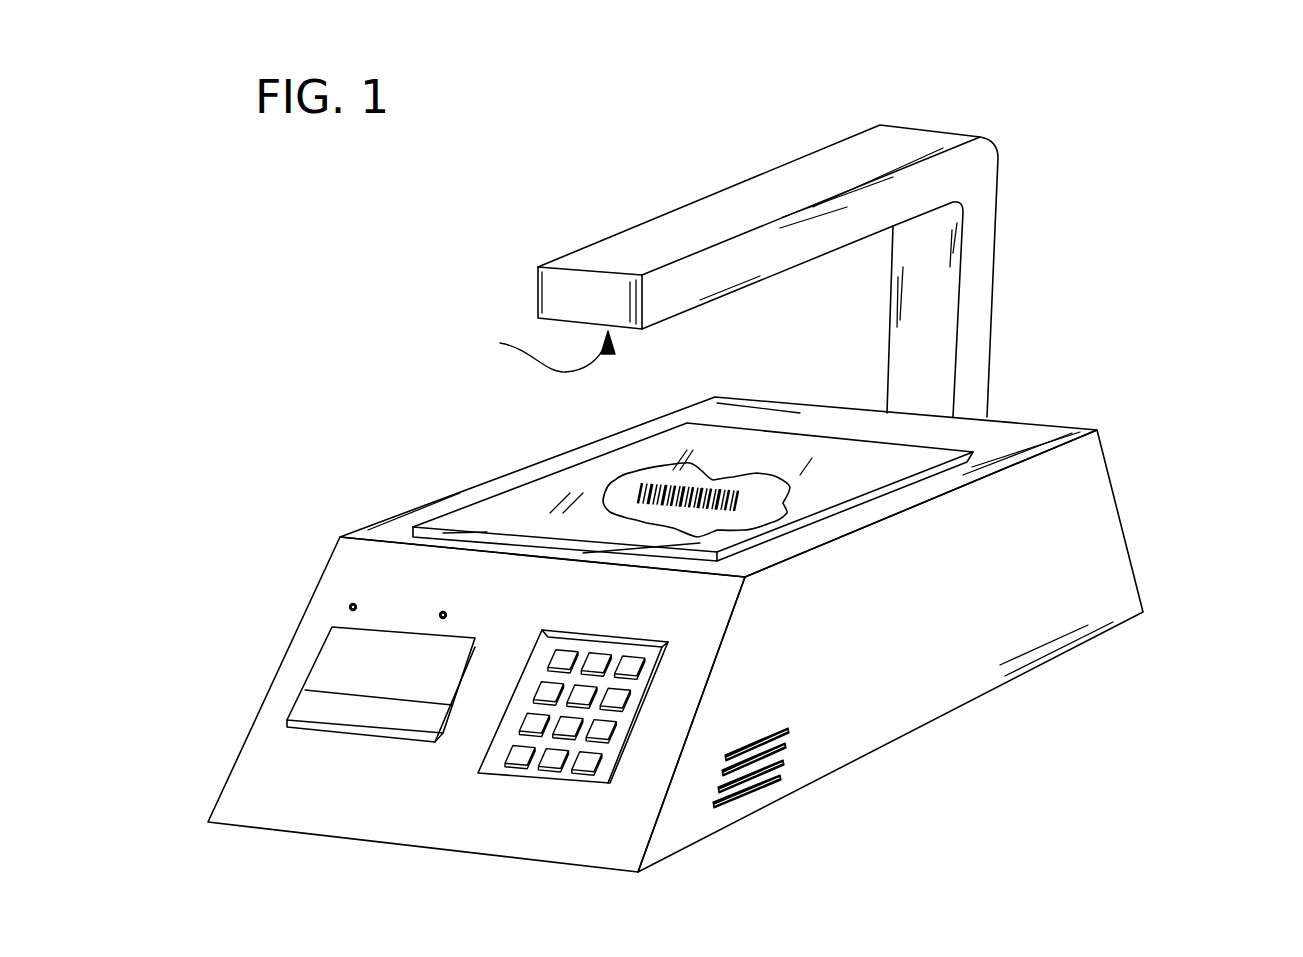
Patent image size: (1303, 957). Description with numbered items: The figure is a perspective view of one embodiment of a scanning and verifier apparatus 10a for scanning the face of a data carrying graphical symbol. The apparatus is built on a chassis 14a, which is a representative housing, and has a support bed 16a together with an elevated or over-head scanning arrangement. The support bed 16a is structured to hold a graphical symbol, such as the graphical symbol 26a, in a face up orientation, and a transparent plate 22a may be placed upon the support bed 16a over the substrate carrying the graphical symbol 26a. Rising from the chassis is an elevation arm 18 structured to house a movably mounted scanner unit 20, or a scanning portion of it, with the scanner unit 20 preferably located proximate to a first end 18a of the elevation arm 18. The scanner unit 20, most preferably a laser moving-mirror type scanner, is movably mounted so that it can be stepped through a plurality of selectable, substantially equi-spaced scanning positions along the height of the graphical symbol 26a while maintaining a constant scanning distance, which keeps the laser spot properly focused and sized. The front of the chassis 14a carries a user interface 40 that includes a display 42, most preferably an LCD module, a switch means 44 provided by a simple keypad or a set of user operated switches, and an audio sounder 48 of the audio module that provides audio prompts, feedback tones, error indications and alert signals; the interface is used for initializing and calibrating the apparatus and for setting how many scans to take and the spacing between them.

The scanning and verifier apparatus 10a is at (1080, 746).
The chassis 14a is at (1092, 555).
The support bed 16a is at (1015, 440).
The elevation arm 18 is at (753, 198).
The first end 18a is at (570, 257).
The scanner unit 20 is at (539, 349).
The transparent plate 22a is at (660, 447).
The graphical symbol 26a is at (633, 496).
The user interface 40 is at (228, 750).
The display 42 is at (325, 657).
The switch means 44 is at (603, 777).
The audio sounder 48 is at (747, 780).